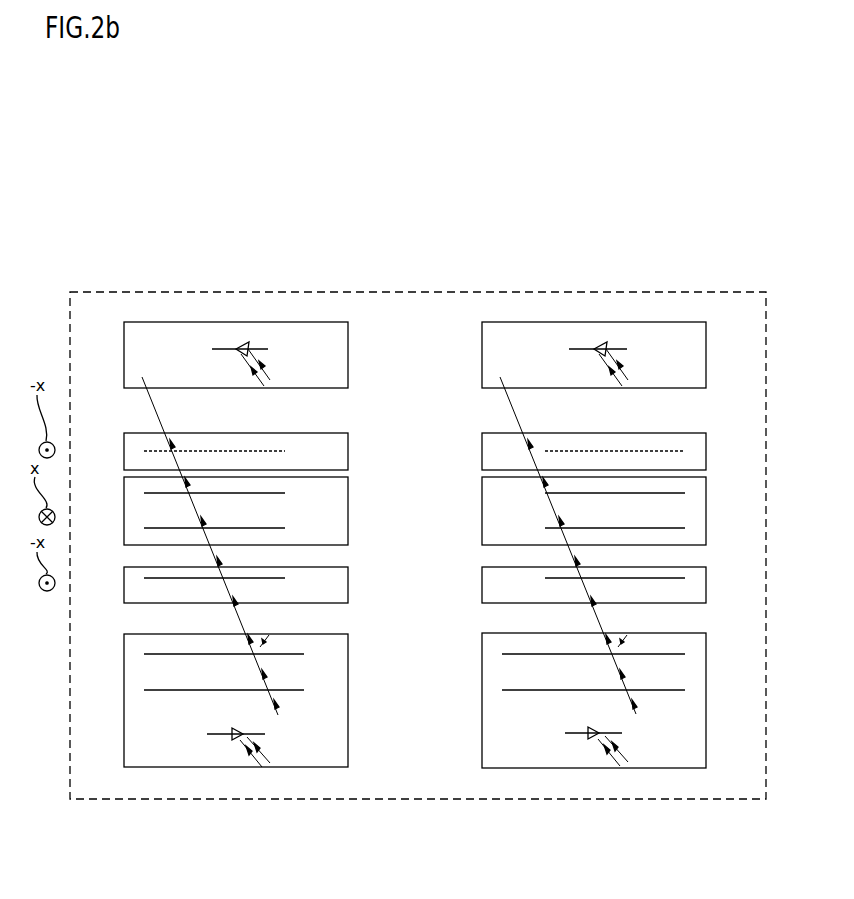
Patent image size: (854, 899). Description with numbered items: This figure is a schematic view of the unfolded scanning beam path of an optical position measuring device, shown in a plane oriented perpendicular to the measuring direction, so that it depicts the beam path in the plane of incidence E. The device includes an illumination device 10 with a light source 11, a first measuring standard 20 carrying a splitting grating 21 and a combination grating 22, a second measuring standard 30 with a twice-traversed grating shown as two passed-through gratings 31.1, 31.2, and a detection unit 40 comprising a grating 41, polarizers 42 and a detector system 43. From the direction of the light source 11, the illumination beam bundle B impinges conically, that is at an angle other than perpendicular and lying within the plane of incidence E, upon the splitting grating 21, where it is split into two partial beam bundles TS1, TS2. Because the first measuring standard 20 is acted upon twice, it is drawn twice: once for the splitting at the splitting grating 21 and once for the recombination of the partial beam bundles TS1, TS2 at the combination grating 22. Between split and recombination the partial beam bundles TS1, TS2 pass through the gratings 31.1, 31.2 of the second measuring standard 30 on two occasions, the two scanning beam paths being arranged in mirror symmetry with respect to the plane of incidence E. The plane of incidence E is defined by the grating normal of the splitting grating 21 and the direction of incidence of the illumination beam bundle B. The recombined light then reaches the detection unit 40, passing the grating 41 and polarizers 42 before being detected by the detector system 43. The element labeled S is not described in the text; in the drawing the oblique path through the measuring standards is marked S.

The plane of incidence E is at (368, 292).
The illumination device 10 is at (124, 340).
The light source 11 is at (238, 341).
The illumination beam bundle B is at (149, 380).
The first measuring standard 20 is at (124, 447).
The splitting grating 21 is at (258, 449).
The combination grating 22 is at (270, 579).
The first partial beam bundle TS1 is at (183, 458).
The second partial beam bundle TS2 is at (545, 462).
The second measuring standard 30 is at (124, 508).
The first passed-through grating 31.1 is at (285, 493).
The second passed-through grating 31.2 is at (285, 528).
The sample S is at (240, 616).
The detection unit 40 is at (124, 672).
The grating 41 is at (278, 654).
The polarizers 42 is at (286, 690).
The detector system 43 is at (262, 736).